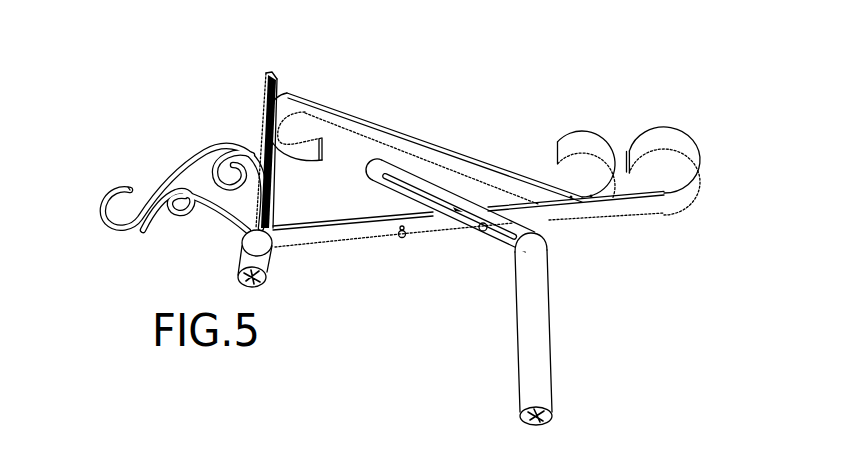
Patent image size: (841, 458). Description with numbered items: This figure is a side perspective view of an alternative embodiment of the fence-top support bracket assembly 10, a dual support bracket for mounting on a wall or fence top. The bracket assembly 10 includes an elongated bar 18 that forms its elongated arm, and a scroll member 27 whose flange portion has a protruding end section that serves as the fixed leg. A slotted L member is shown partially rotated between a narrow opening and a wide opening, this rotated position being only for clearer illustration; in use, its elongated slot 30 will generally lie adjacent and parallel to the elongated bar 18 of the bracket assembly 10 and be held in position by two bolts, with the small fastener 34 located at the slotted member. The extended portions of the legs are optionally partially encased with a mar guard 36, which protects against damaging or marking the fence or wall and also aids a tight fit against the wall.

The fence-top support bracket assembly 10 is at (212, 62).
The elongated bar 18 is at (647, 207).
The scroll member 27 is at (162, 178).
The elongated slot 30 is at (510, 237).
The pin fastener 34 is at (483, 231).
The mar guard 36 is at (516, 325).